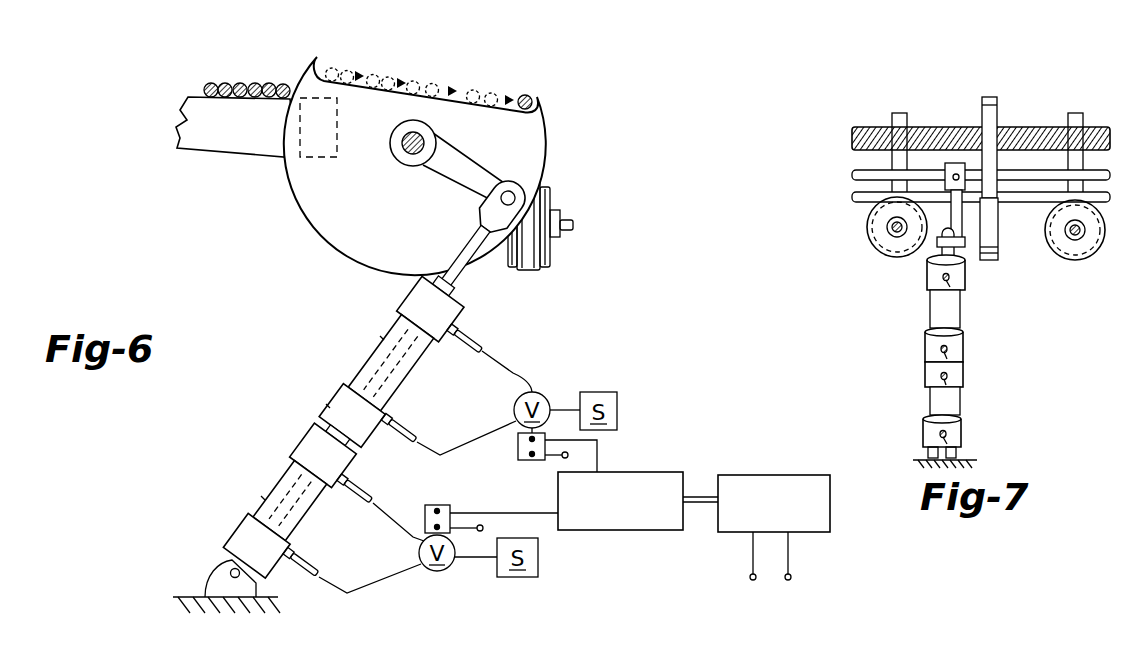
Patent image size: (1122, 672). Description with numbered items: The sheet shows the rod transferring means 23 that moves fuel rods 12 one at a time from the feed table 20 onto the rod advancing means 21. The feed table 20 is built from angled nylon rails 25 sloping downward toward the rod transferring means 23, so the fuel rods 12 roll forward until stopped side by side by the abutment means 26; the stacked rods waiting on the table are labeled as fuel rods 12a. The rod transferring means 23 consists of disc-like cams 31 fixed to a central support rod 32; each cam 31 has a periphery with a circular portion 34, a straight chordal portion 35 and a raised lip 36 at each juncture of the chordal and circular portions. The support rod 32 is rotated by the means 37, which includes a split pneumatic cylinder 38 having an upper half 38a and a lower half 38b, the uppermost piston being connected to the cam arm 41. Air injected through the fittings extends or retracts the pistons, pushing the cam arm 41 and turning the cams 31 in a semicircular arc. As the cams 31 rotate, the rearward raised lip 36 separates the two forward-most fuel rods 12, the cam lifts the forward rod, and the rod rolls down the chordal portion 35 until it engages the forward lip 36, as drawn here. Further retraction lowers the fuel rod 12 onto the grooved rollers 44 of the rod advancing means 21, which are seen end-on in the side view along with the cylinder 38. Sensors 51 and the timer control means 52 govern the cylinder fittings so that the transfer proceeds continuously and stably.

In FIG. 6, the fuel rod 12 is at (525, 95).
In FIG. 7, the fuel rod 12 is at (1037, 203).
In FIG. 6, the bags on conveyor 12a is at (257, 81).
In FIG. 7, the bags on conveyor 12a is at (1041, 127).
In FIG. 6, the feed table 20 is at (168, 126).
In FIG. 7, the rod advancing means 21 is at (905, 270).
In FIG. 6, the rod transferring means 23 is at (288, 219).
In FIG. 7, the rod transferring means 23 is at (1000, 93).
In FIG. 6, the nylon rail 25 is at (247, 141).
In FIG. 7, the nylon rail 25 is at (915, 101).
In FIG. 6, the abutment means 26 is at (339, 110).
In FIG. 6, the cam 31 is at (373, 232).
In FIG. 7, the cam 31 is at (990, 238).
In FIG. 6, the support rod 32 is at (400, 146).
In FIG. 7, the support rod 32 is at (853, 175).
In FIG. 6, the circular portion 34 is at (337, 253).
In FIG. 6, the straight chordal portion 35 is at (383, 84).
In FIG. 6, the raised lip 36 is at (317, 57).
In FIG. 6, the means for rotating the support rod 37 is at (268, 472).
In FIG. 7, the means for rotating the support rod 37 is at (1014, 377).
In FIG. 7, the split pneumatic cylinder 38 is at (961, 351).
In FIG. 7, the upper half 38a is at (956, 311).
In FIG. 7, the lower half 38b is at (956, 403).
In FIG. 7, the cam arm 41 is at (958, 220).
In FIG. 6, the grooved roller 44 is at (552, 266).
In FIG. 7, the grooved roller 44 is at (903, 258).
In FIG. 6, the sensor 51 is at (753, 475).
In FIG. 6, the timer control means 52 is at (623, 472).